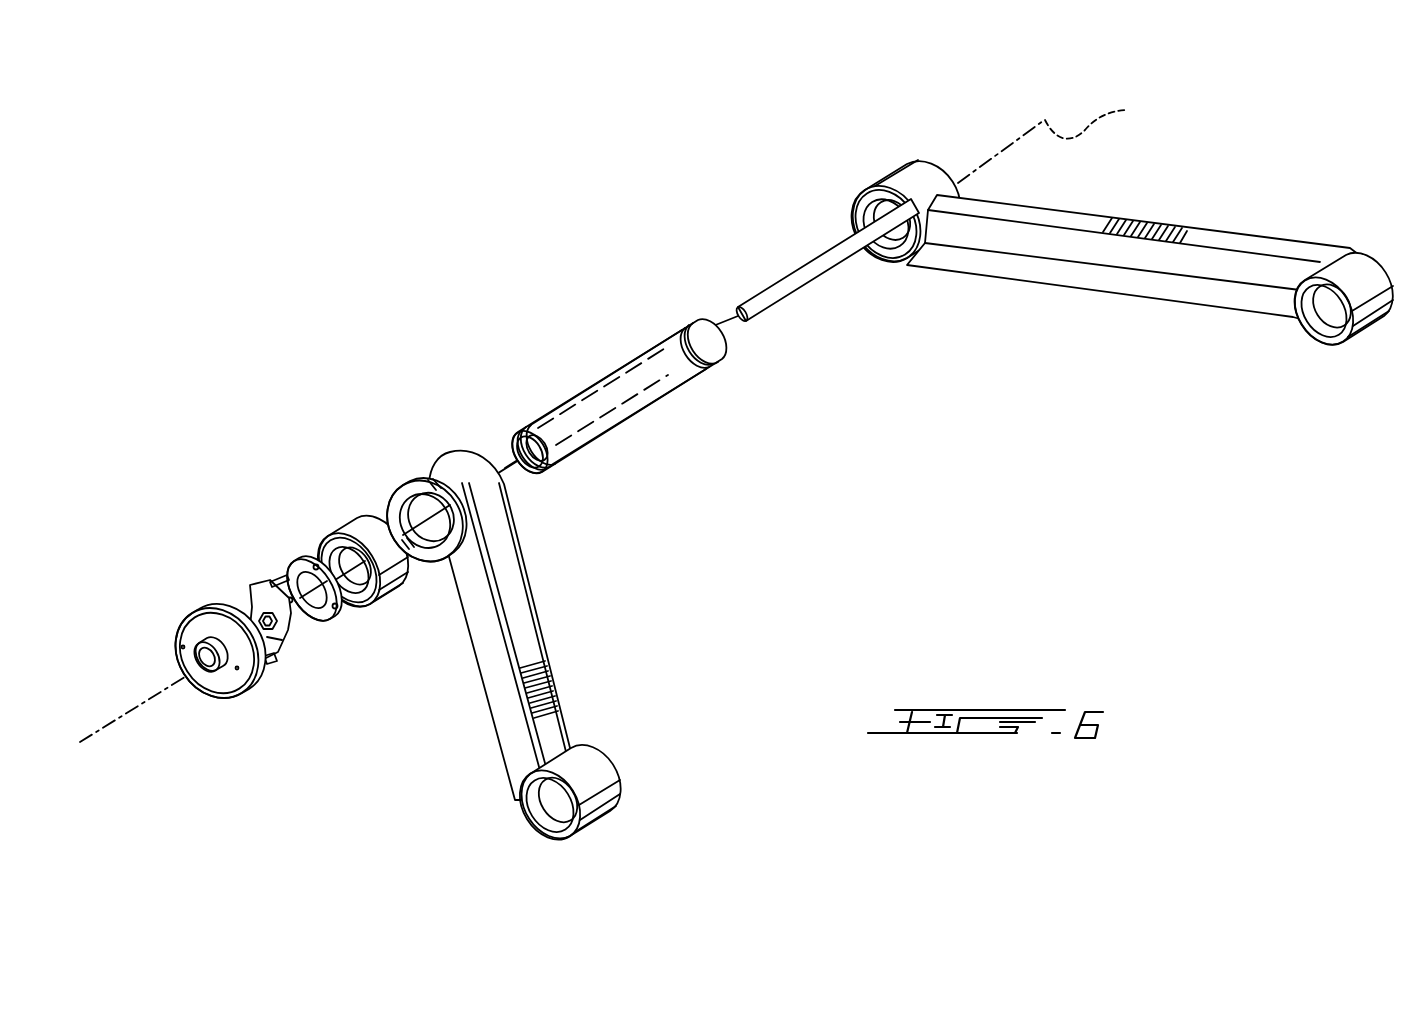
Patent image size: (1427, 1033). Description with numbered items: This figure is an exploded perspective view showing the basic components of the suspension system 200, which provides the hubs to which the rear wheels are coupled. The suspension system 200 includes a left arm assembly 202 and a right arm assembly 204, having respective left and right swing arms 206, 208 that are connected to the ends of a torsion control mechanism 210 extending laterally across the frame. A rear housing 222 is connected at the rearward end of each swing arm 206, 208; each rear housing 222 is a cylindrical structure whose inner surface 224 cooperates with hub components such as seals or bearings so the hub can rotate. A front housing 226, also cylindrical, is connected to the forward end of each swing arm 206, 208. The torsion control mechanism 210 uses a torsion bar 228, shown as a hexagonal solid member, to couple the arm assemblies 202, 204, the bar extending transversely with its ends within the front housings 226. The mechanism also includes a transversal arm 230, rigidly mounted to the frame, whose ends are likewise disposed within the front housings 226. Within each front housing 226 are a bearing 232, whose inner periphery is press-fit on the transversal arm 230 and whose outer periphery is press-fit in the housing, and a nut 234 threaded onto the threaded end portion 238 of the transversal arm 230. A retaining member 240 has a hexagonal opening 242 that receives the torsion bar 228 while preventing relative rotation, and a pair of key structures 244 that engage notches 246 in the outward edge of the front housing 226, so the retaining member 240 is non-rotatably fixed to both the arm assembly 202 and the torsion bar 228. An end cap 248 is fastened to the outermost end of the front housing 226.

The suspension system 200 is at (956, 108).
The left arm assembly 202 is at (476, 676).
The right arm assembly 204 is at (1066, 208).
The left swing arm 206 is at (522, 628).
The right swing arm 208 is at (1227, 243).
The torsion control mechanism 210 is at (692, 226).
The rear housing 222 is at (1380, 262).
The inner surface 224 is at (1327, 307).
The front housing 226 is at (426, 480).
The torsion bar 228 is at (830, 270).
The transversal arm 230 is at (612, 388).
The bearing 232 is at (342, 532).
The nut 234 is at (286, 572).
The threaded end portion 238 is at (722, 352).
The retaining member 240 is at (286, 640).
The hexagonal opening 242 is at (295, 632).
The key structures 244 is at (262, 586).
The notches 246 is at (432, 479).
The end cap 248 is at (205, 692).